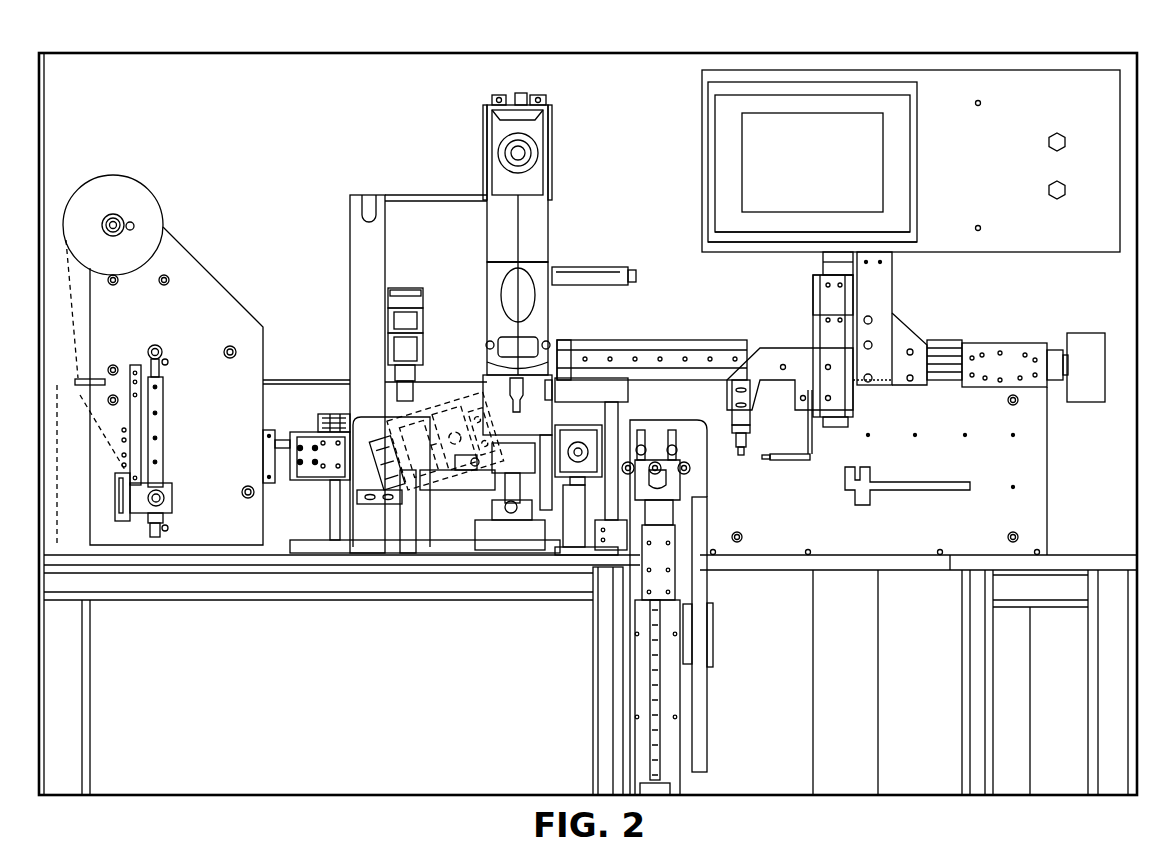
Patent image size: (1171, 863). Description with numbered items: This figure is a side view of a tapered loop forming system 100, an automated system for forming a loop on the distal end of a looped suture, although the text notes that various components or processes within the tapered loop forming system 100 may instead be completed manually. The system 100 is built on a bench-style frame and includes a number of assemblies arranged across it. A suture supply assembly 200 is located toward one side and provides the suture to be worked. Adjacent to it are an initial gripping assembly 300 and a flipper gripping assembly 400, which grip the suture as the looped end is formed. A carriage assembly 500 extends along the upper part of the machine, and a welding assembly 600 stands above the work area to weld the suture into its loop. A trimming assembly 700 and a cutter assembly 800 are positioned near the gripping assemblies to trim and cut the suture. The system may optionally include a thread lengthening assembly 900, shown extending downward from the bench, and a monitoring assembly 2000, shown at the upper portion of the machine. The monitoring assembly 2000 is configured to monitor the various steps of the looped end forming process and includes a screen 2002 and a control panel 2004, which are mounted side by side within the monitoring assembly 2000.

The tapered loop forming system 100 is at (363, 44).
The suture supply assembly 200 is at (209, 260).
The initial gripping assembly 300 is at (400, 430).
The flipper gripping assembly 400 is at (455, 488).
The carriage assembly 500 is at (722, 322).
The welding assembly 600 is at (578, 232).
The trimming assembly 700 is at (548, 490).
The cutter assembly 800 is at (444, 400).
The thread lengthening assembly 900 is at (714, 530).
The monitoring assembly 2000 is at (683, 125).
The screen 2002 is at (786, 174).
The control panel 2004 is at (968, 177).